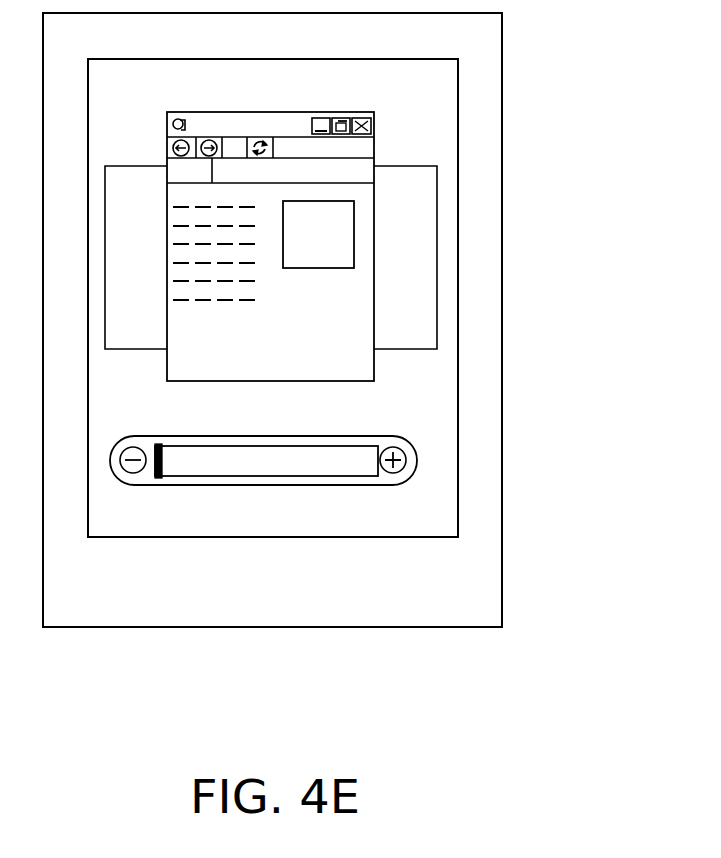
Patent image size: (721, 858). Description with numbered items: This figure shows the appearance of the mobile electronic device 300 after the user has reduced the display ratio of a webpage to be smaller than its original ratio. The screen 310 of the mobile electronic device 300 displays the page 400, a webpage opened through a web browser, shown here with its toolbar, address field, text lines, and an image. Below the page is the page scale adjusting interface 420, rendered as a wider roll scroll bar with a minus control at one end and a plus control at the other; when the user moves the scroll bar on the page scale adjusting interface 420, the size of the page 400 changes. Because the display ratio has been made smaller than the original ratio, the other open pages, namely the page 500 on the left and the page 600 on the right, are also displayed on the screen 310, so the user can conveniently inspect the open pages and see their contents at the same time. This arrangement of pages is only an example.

The mobile electronic device 300 is at (502, 334).
The screen 310 is at (458, 462).
The page 400 is at (361, 367).
The page 500 is at (154, 338).
The page 600 is at (425, 337).
The page scale adjusting interface 420 is at (297, 485).